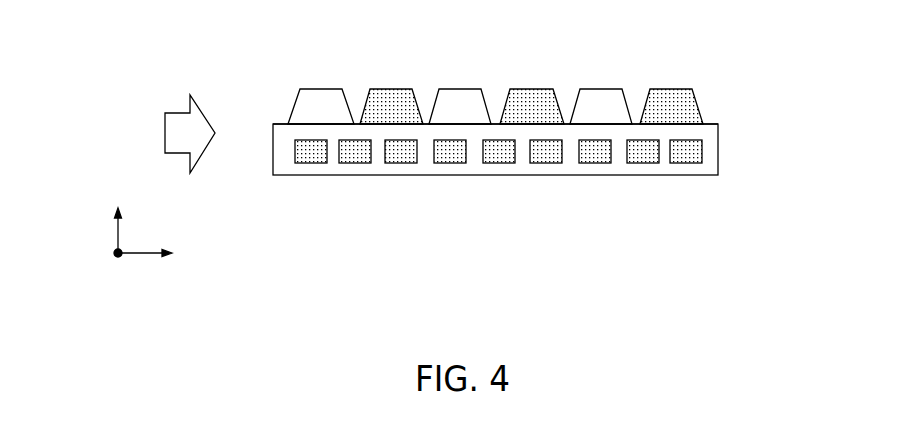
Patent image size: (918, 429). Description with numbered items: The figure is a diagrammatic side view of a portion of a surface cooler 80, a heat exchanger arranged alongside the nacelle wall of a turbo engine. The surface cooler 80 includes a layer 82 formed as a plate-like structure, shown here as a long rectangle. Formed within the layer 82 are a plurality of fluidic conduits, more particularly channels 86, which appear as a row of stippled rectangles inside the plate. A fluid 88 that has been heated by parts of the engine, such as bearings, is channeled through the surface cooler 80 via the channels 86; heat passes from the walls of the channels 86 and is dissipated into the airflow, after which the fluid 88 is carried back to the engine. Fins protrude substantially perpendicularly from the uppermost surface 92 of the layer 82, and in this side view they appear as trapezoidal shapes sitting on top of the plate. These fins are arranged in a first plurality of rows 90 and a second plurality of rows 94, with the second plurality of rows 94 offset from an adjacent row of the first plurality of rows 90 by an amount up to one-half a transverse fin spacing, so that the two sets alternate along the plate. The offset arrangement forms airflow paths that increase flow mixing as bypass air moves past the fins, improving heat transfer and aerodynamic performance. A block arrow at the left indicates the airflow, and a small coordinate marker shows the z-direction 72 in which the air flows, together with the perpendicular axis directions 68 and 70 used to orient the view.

The origin of coordinate system 68 is at (113, 257).
The vertical axis direction 70 is at (117, 233).
The z-direction 72 is at (145, 255).
The surface cooler 80 is at (553, 125).
The layer 82 is at (665, 168).
The channels 86 is at (549, 160).
The fluid 88 is at (355, 160).
The first plurality of rows 90 is at (531, 89).
The uppermost surface 92 is at (711, 124).
The second plurality of rows 94 is at (330, 89).